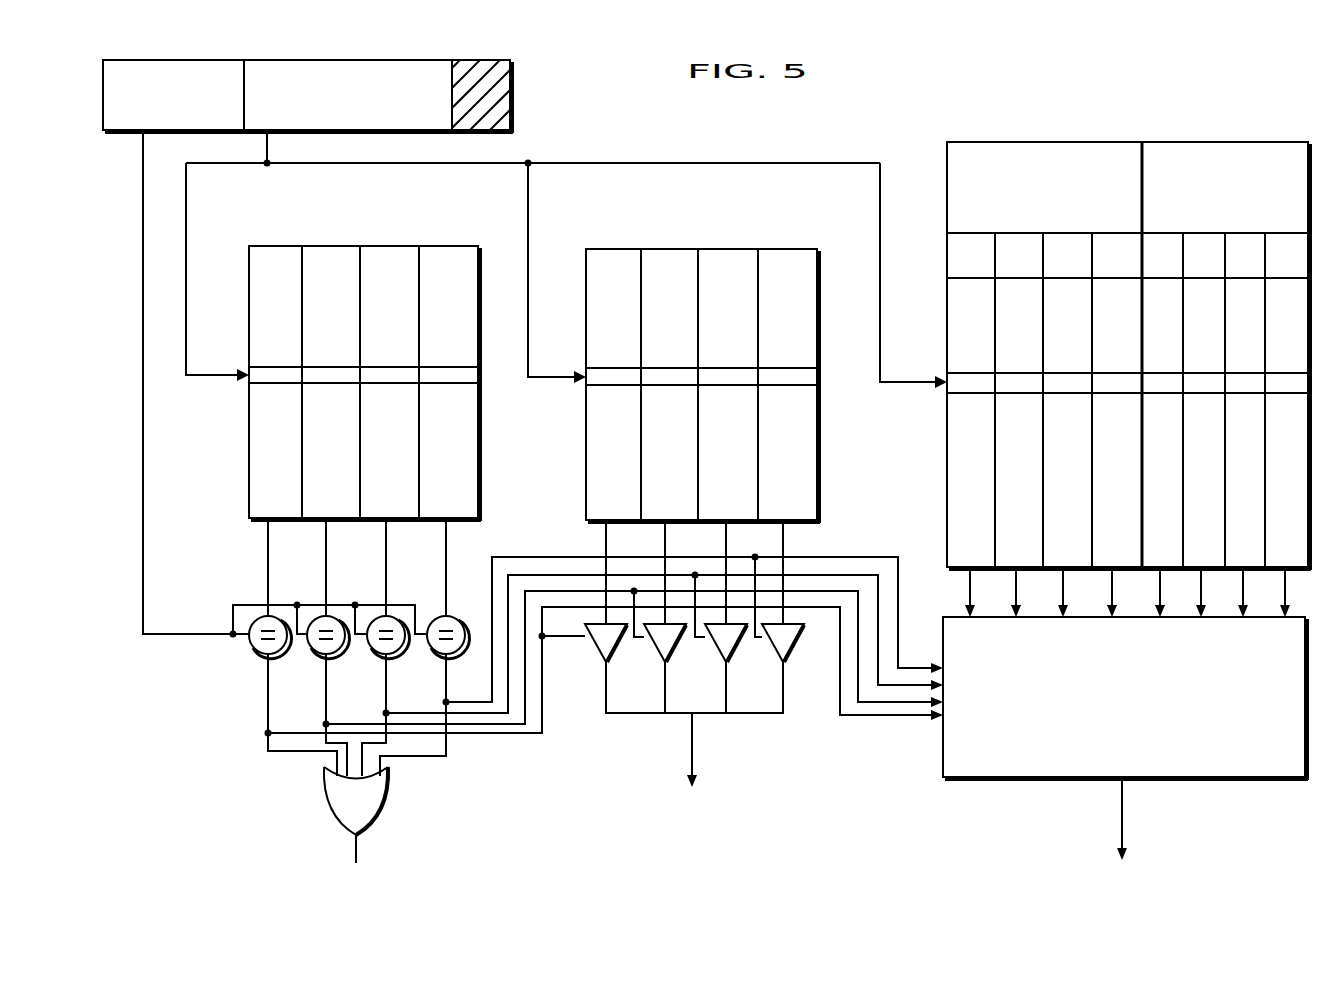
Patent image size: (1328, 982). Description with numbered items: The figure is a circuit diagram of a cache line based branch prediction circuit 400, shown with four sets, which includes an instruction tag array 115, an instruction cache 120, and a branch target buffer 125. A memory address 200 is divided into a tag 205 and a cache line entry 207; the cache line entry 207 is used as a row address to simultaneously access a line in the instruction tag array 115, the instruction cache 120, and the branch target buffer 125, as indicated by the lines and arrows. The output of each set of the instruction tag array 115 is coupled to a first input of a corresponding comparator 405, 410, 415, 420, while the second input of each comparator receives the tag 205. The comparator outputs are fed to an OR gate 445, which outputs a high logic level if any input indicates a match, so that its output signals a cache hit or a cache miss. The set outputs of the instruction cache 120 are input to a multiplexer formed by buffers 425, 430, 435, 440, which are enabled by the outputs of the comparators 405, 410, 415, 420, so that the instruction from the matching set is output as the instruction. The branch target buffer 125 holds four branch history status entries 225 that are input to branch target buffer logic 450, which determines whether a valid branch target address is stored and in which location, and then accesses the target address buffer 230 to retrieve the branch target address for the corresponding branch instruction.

The cache line based branch prediction circuit 400 is at (185, 792).
The memory address 200 is at (331, 83).
The tag 205 is at (156, 120).
The cache line entry 207 is at (330, 120).
The instruction tag array 115 is at (365, 351).
The instruction cache 120 is at (703, 352).
The branch target buffer 125 is at (1129, 340).
The branch history status entries 225 is at (1028, 228).
The target address buffer 230 is at (1209, 228).
The comparator 405 is at (253, 652).
The comparator 410 is at (311, 652).
The comparator 415 is at (371, 652).
The comparator 420 is at (431, 652).
The buffer 425 is at (598, 645).
The buffer 430 is at (656, 645).
The buffer 435 is at (716, 645).
The buffer 440 is at (773, 645).
The OR gate 445 is at (340, 810).
The branch target buffer logic 450 is at (1108, 736).